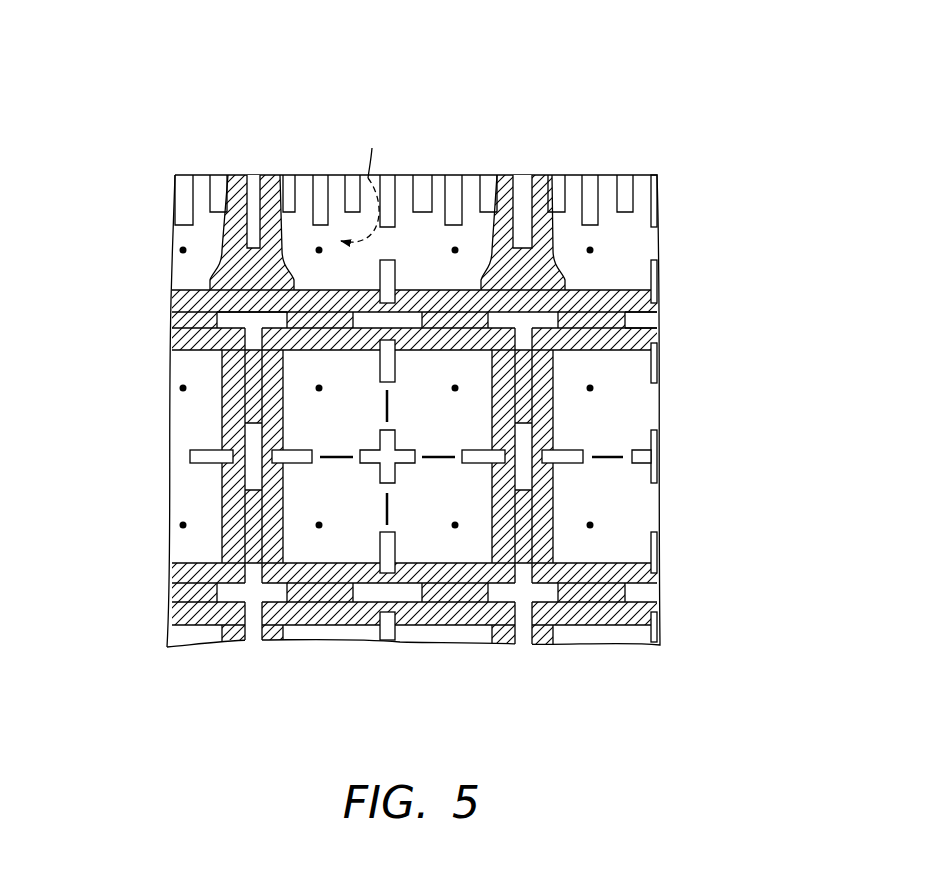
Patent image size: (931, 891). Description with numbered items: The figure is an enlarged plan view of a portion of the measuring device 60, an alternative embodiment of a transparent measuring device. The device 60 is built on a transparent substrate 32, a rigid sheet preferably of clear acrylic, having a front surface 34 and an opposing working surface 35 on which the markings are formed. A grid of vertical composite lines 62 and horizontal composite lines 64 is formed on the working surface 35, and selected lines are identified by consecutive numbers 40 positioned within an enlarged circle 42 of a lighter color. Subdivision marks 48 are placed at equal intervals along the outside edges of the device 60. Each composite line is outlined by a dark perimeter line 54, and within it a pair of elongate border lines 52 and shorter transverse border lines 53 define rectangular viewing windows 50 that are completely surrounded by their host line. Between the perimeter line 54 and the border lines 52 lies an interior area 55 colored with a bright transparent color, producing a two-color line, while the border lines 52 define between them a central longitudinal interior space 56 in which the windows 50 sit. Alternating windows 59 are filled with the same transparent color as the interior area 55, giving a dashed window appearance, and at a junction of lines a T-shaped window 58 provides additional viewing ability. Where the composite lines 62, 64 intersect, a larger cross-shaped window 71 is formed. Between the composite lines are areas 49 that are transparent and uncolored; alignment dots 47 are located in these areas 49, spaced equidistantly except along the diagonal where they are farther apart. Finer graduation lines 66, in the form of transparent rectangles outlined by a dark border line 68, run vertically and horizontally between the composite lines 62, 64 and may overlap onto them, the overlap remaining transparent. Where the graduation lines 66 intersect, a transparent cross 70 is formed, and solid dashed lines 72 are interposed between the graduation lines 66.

The measuring device 60 is at (442, 86).
The transparent substrate 32 is at (166, 174).
The front surface 34 is at (200, 176).
The numbers 40 is at (280, 250).
The working surface 35 is at (364, 180).
The elongate border lines 52 is at (404, 312).
The perimeter line 54 is at (432, 286).
The vertical composite lines 62 is at (487, 229).
The horizontal composite lines 64 is at (572, 286).
The subdivision marks 48 is at (590, 207).
The enlarged circle 42 is at (208, 270).
The central longitudinal interior space 56 is at (168, 318).
The T-shaped window 58 is at (247, 320).
The dark border line 68 is at (213, 448).
The solid dashed lines 72 is at (184, 457).
The graduation lines 66 is at (196, 467).
The alignment dots 47 is at (176, 525).
The areas 49 is at (188, 549).
The interior area 55 is at (603, 300).
The transverse border lines 53 is at (627, 322).
The viewing windows 50 is at (667, 323).
The alternating windows 59 is at (583, 318).
The transparent cross 70 is at (397, 441).
The cross-shaped window 71 is at (250, 605).